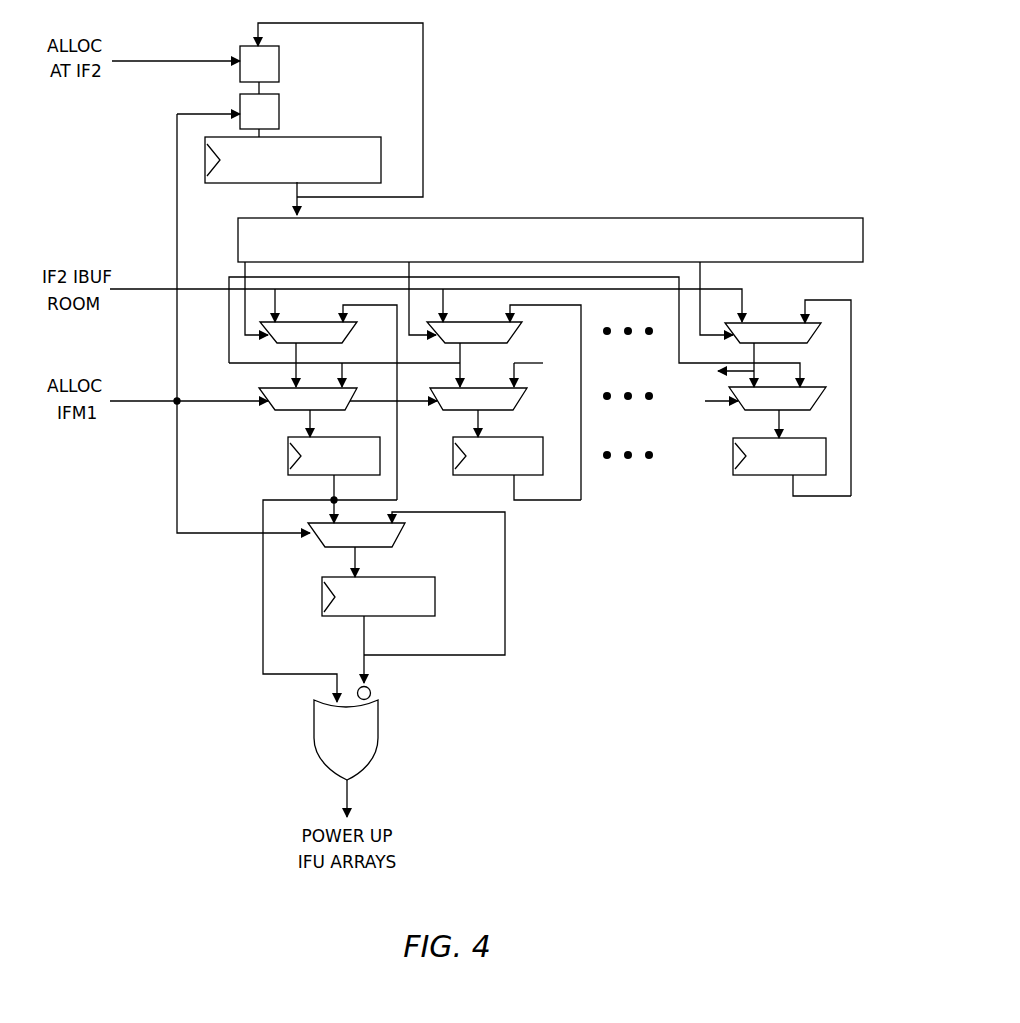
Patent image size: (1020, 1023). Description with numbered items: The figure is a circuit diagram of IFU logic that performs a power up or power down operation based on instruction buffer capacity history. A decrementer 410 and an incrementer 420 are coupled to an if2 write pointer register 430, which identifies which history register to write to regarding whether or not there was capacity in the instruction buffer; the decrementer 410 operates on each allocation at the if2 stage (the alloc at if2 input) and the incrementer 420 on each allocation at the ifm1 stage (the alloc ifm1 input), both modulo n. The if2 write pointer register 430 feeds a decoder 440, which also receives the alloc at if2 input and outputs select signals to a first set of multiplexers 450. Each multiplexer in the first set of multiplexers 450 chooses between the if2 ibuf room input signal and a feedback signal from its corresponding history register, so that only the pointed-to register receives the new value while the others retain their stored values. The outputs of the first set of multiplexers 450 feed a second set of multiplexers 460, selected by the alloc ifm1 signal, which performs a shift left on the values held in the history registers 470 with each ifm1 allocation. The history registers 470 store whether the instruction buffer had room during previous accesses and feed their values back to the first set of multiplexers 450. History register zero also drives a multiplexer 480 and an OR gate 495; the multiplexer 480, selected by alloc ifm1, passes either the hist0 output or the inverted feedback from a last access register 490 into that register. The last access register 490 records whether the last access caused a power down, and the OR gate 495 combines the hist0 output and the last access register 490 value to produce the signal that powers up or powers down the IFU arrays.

The decrementer 410 is at (280, 62).
The incrementer 420 is at (280, 110).
The if2 write pointer register 430 is at (358, 137).
The decoder 440 is at (592, 218).
The first set of multiplexers 450 is at (866, 310).
The second set of multiplexers 460 is at (866, 372).
The history registers 470 is at (866, 432).
The multiplexer 480 is at (420, 538).
The last access register 490 is at (435, 600).
The OR gate 495 is at (378, 738).